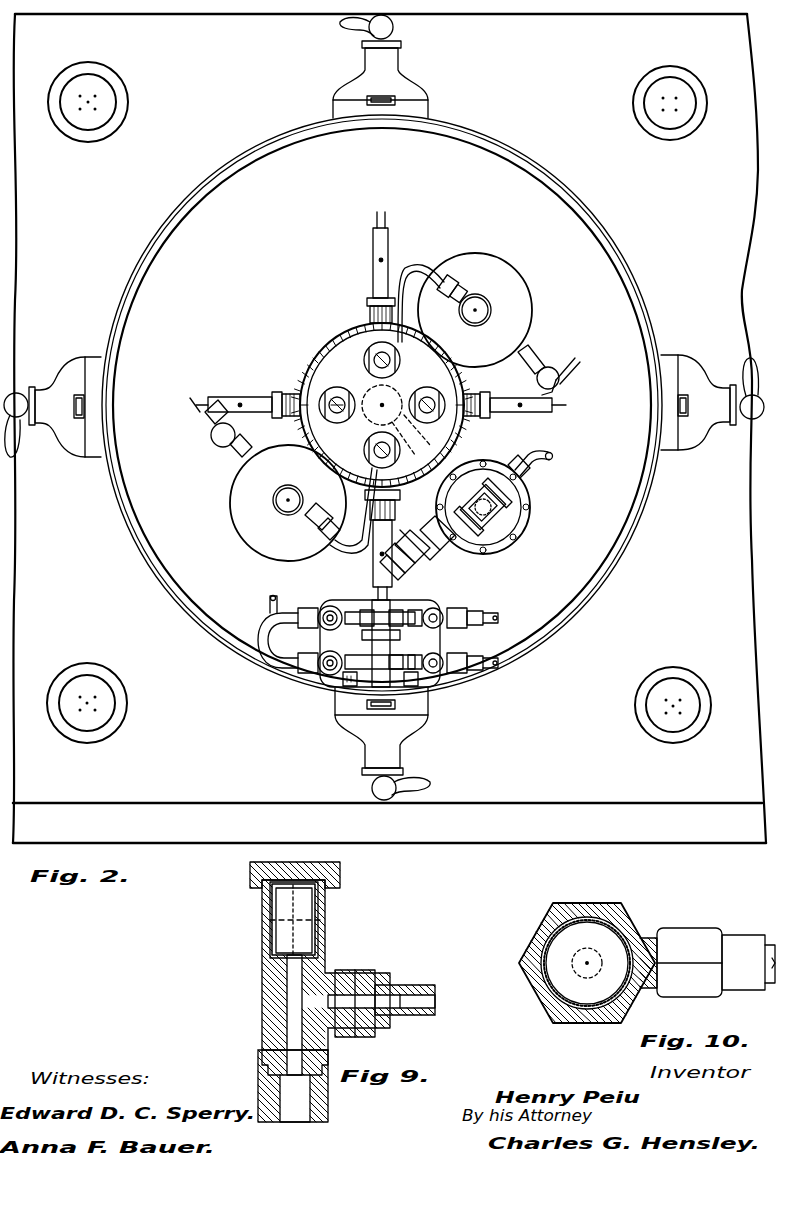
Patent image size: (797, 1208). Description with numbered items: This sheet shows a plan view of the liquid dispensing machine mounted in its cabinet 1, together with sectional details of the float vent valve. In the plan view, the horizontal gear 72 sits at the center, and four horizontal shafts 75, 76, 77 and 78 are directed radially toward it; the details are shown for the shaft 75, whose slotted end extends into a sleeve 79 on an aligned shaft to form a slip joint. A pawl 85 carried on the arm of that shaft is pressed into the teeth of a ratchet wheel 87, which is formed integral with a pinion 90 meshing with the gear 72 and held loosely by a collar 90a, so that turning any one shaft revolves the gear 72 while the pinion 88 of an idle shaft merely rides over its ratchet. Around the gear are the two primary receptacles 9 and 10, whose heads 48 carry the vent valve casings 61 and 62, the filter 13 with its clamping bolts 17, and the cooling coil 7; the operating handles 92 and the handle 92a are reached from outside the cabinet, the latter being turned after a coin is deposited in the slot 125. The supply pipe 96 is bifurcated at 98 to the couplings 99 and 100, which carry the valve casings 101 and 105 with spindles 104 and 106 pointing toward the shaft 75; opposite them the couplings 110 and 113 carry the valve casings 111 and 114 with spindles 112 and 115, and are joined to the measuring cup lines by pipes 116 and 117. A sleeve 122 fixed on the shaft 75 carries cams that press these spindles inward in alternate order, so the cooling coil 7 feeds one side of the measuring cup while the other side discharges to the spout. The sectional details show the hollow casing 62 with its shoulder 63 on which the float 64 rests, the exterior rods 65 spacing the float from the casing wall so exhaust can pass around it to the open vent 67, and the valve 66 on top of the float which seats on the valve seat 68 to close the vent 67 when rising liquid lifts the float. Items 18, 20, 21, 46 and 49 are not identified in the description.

In FIG. 2, the cabinet 1 is at (389, 428).
In FIG. 2, the bolt holes 20 is at (100, 108).
In FIG. 2, the operating handles 92 is at (350, 22).
In FIG. 2, the handle 92a is at (430, 784).
In FIG. 2, the cooling coil 7 is at (367, 397).
In FIG. 2, the horizontal gear 72 is at (318, 350).
In FIG. 2, the pinion 90 is at (312, 382).
In FIG. 2, the collar 90a is at (356, 378).
In FIG. 2, the horizontal shaft 77 is at (402, 216).
In FIG. 2, the horizontal shaft 78 is at (200, 397).
In FIG. 2, the pawl 85 is at (500, 380).
In FIG. 2, the horizontal shaft 76 is at (562, 408).
In FIG. 2, the sleeve 79 is at (372, 535).
In FIG. 2, the horizontal shaft 75 is at (373, 578).
In FIG. 2, the primary receptacle 9 is at (415, 359).
In FIG. 2, the valve casing 62 is at (480, 326).
In FIG. 9, the valve casing 62 is at (262, 942).
In FIG. 2, the pinion 88 is at (470, 350).
In FIG. 2, the primary receptacle 10 is at (342, 480).
In FIG. 9, the primary receptacle 10 is at (380, 930).
In FIG. 2, the valve casing 61 is at (278, 510).
In FIG. 2, the connecting pipe 46 is at (332, 538).
In FIG. 2, the ratchet wheel 87 is at (260, 418).
In FIG. 2, the filter 13 is at (489, 515).
In FIG. 2, the bolts 17 is at (540, 500).
In FIG. 2, the vent pipe 18 is at (555, 456).
In FIG. 2, the connecting pipe 21 is at (430, 525).
In FIG. 2, the coupling 100 is at (376, 661).
In FIG. 2, the coupling 99 is at (322, 606).
In FIG. 2, the valve casing 101 is at (348, 640).
In FIG. 2, the coupling 110 is at (450, 615).
In FIG. 2, the coupling 113 is at (448, 672).
In FIG. 2, the spindle 104 is at (364, 609).
In FIG. 2, the spindle 112 is at (396, 608).
In FIG. 2, the valve casing 111 is at (416, 608).
In FIG. 2, the sleeve 122 is at (405, 645).
In FIG. 2, the valve casing 114 is at (415, 672).
In FIG. 2, the spindle 115 is at (408, 688).
In FIG. 2, the valve casing 105 is at (350, 688).
In FIG. 2, the spindle 106 is at (365, 675).
In FIG. 2, the bifurcation 98 is at (258, 632).
In FIG. 2, the pipe 96 is at (273, 594).
In FIG. 2, the pipe 116 is at (490, 612).
In FIG. 2, the pipe 117 is at (490, 660).
In FIG. 2, the slot 125 is at (382, 710).
In FIG. 9, the head 48 is at (258, 998).
In FIG. 9, the pipe connection 49 is at (410, 985).
In FIG. 10, the pipe connection 49 is at (766, 940).
In FIG. 9, the valve 66 is at (330, 870).
In FIG. 9, the vent 67 is at (296, 870).
In FIG. 9, the valve seat 68 is at (300, 882).
In FIG. 9, the rods 65 is at (272, 912).
In FIG. 10, the rods 65 is at (583, 920).
In FIG. 9, the float 64 is at (318, 918).
In FIG. 10, the float 64 is at (575, 953).
In FIG. 9, the shoulder 63 is at (325, 950).